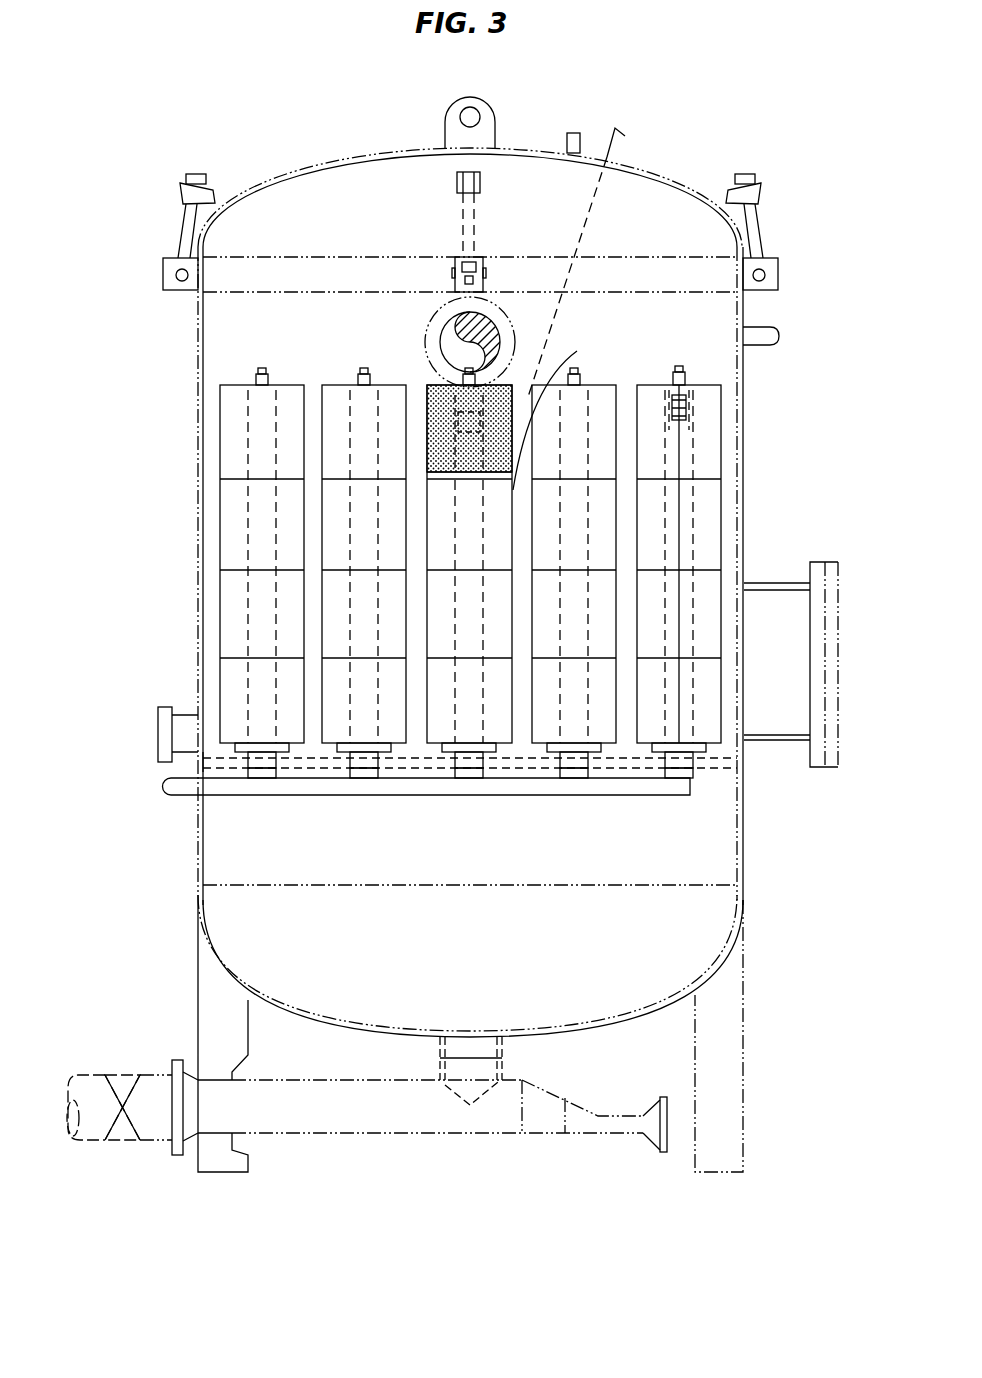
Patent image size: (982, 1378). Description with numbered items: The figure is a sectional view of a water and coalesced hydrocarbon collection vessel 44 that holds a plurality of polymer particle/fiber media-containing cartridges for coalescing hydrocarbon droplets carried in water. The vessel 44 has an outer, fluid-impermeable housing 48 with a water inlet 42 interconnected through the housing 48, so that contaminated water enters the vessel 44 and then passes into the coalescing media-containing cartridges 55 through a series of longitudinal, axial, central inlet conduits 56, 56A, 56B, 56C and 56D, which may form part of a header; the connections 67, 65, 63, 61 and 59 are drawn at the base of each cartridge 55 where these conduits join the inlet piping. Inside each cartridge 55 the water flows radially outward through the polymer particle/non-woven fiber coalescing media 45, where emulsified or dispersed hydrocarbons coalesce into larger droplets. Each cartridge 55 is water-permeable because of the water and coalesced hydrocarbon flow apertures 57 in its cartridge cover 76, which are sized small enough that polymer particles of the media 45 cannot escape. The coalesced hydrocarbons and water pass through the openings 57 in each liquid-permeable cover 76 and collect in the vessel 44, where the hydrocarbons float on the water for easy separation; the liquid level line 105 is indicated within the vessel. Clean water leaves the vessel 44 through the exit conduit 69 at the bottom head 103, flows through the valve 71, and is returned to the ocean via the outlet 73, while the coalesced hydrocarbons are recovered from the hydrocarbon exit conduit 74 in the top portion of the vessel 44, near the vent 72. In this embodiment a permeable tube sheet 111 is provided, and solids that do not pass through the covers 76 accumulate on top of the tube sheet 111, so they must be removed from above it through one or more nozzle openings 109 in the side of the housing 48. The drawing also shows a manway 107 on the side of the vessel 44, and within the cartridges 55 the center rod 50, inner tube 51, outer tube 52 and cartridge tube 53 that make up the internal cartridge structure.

The water and coalesced hydrocarbon collection vessel 44 is at (447, 501).
The outer, fluid-impermeable housing 48 is at (203, 332).
The vent 72 is at (607, 157).
The hydrocarbon exit conduit 74 is at (779, 335).
The polymer particle/non-woven fiber coalescing media 45 is at (430, 400).
The water and coalesced hydrocarbon flow apertures 57 is at (502, 388).
The cartridge cover 76 is at (559, 412).
The coalescing media-containing cartridges 55 is at (476, 535).
The center rod 50 is at (695, 447).
The inner tube 51 is at (590, 500).
The outer tube 52 is at (485, 538).
The cartridge tube 53 is at (352, 591).
The manway 107 is at (780, 605).
The nozzle openings 109 is at (158, 720).
The permeable tube sheet 111 is at (312, 766).
The water inlet 42 is at (182, 792).
The central inlet conduit 56 is at (271, 799).
The central inlet conduit 56A is at (382, 800).
The central inlet conduit 56B is at (487, 800).
The central inlet conduit 56C is at (593, 800).
The central inlet conduit 56D is at (694, 800).
The connection 67 is at (272, 774).
The connection 65 is at (372, 774).
The connection 63 is at (478, 774).
The connection 61 is at (580, 774).
The connection 59 is at (695, 774).
The liquid level line 105 is at (745, 886).
The bottom head 103 is at (228, 922).
The exit conduit 69 is at (480, 1038).
The valve 71 is at (113, 1095).
The outlet 73 is at (88, 1075).